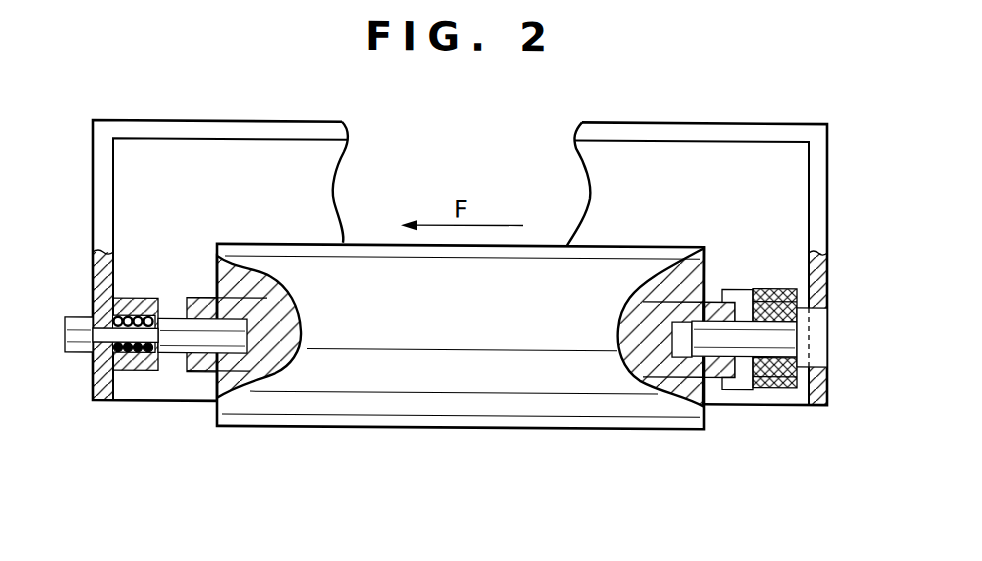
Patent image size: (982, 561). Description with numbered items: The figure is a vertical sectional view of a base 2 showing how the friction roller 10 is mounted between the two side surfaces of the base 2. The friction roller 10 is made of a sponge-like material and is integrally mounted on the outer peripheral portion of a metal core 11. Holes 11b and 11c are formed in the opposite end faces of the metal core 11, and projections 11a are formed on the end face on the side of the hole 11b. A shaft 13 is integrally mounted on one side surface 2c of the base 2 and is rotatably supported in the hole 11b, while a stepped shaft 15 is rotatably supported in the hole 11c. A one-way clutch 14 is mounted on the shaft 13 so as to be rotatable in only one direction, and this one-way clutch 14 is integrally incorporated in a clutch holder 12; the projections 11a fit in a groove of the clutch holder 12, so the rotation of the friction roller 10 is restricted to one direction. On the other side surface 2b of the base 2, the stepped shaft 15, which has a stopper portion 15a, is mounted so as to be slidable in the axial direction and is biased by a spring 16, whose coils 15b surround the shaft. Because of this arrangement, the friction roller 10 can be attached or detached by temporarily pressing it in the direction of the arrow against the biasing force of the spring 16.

The base 2 is at (209, 131).
The other side surface 2b is at (94, 383).
The one side surface 2c is at (820, 383).
The friction roller 10 is at (423, 393).
The metal core 11 is at (632, 354).
The projections 11a is at (718, 376).
The hole 11b is at (683, 338).
The hole 11c is at (232, 362).
The clutch holder 12 is at (778, 385).
The shaft 13 is at (782, 330).
The one-way clutch 14 is at (810, 296).
The stepped shaft 15 is at (188, 340).
The stopper portion 15a is at (78, 330).
The spring 15b is at (110, 328).
The spring 16 is at (123, 355).